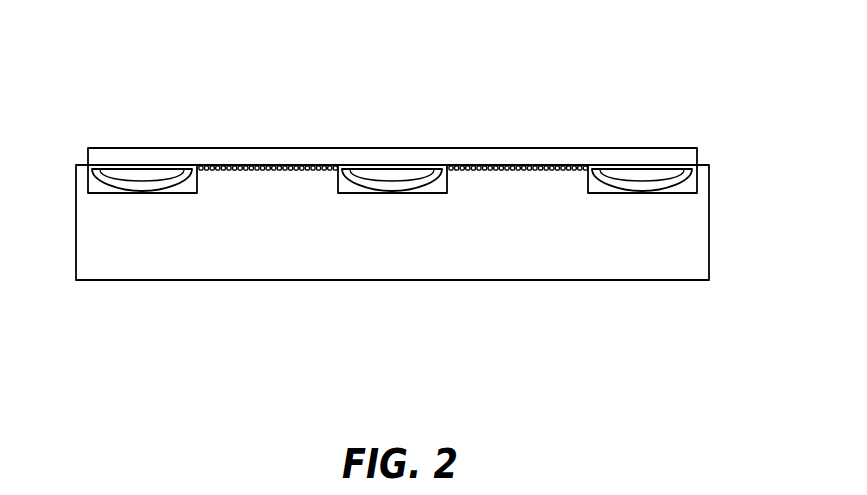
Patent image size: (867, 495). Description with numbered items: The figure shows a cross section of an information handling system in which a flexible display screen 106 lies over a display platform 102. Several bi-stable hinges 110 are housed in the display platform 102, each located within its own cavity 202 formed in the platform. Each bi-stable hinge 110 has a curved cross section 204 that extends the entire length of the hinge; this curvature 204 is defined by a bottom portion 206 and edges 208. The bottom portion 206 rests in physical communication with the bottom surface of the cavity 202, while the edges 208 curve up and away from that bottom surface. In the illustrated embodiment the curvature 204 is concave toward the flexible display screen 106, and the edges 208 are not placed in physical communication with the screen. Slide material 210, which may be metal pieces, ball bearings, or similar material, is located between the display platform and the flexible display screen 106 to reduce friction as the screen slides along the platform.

The display platform 102 is at (716, 241).
The flexible display screen 106 is at (330, 139).
The bi-stable hinge 110 is at (133, 166).
The cavity 202 is at (86, 198).
The curved cross section 204 is at (178, 198).
The bottom portion 206 is at (147, 182).
The edges 208 is at (96, 166).
The slide material 210 is at (253, 166).